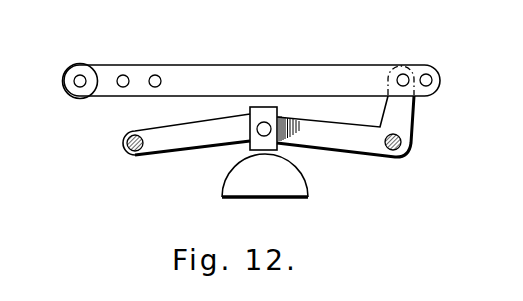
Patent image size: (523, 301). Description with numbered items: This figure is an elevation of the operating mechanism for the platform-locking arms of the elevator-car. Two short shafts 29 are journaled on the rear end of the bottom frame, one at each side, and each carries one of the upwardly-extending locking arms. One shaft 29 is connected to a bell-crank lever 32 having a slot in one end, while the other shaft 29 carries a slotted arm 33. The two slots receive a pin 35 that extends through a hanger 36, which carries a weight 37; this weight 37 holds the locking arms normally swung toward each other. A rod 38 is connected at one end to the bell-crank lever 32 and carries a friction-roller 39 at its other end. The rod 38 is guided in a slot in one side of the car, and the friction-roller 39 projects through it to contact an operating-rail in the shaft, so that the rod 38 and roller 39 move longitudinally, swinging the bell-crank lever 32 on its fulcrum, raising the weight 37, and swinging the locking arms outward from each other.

The shaft 29 is at (122, 142).
The bell-crank lever 32 is at (344, 150).
The slotted arm 33 is at (157, 150).
The pin 35 is at (268, 121).
The hanger 36 is at (248, 148).
The weight 37 is at (292, 187).
The rod 38 is at (220, 70).
The friction-roller 39 is at (72, 64).